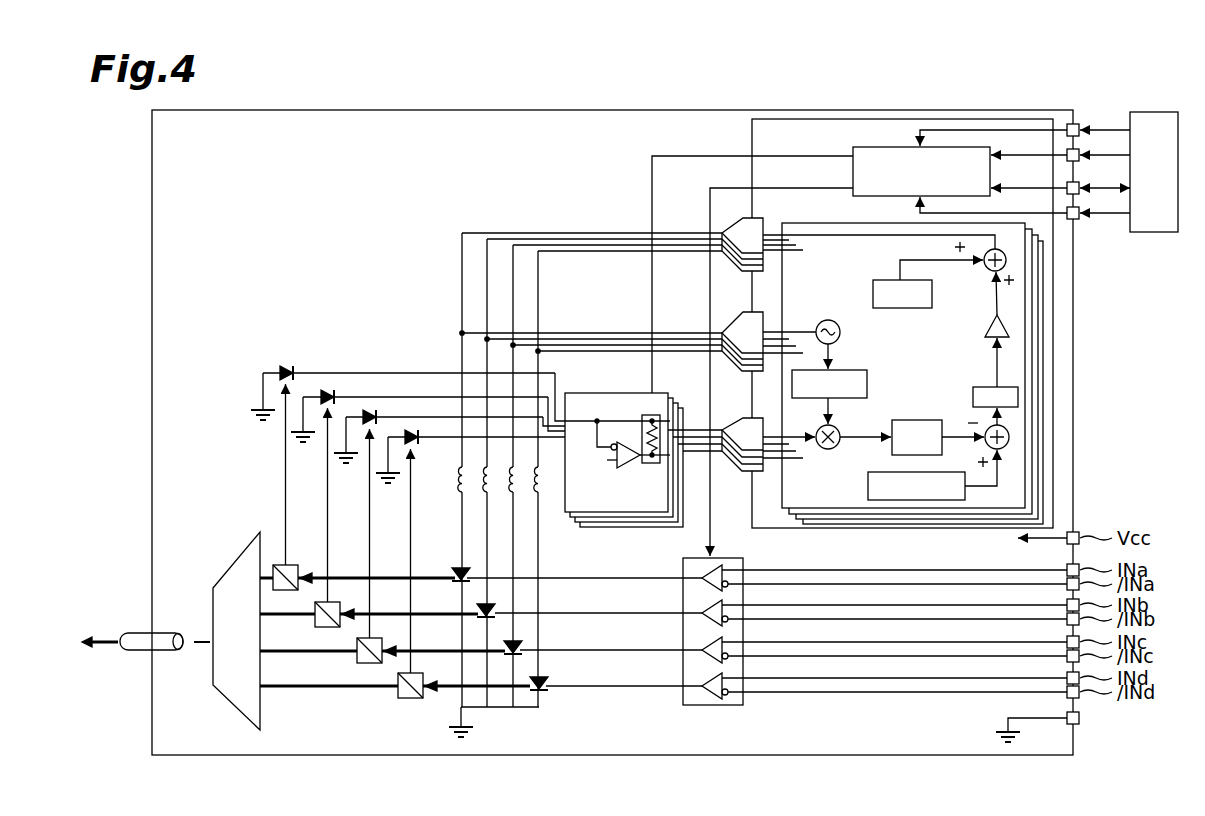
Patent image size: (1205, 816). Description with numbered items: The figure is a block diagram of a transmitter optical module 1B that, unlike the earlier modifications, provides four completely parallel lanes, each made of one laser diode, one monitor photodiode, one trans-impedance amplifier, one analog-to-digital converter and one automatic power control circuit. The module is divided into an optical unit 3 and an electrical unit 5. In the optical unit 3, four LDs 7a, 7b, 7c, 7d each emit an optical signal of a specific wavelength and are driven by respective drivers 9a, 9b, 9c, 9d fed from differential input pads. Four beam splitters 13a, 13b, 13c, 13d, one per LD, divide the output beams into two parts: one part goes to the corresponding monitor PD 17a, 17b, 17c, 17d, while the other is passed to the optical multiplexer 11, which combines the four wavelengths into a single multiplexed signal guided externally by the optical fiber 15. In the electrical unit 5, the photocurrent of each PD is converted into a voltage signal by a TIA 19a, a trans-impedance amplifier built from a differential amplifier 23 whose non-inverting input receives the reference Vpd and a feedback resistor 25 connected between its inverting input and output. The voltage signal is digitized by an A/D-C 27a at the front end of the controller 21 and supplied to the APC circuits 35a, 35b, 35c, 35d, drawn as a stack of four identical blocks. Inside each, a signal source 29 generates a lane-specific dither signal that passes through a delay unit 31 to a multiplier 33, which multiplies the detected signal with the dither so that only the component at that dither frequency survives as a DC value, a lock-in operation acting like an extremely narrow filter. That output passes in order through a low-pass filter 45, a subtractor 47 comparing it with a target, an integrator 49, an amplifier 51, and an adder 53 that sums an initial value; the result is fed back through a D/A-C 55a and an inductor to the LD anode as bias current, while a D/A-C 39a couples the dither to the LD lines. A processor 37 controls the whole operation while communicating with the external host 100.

The transmitter optical module 1B is at (980, 97).
The external host 100 is at (1152, 111).
The electrical unit 5 is at (716, 127).
The controller 21 is at (1055, 268).
The processor 37 is at (853, 177).
The digital-to-analog converter 55a is at (760, 218).
The digital-to-analog converter 39a is at (737, 319).
The analog-to-digital converter 27a is at (749, 474).
The APC circuit 35a is at (1026, 325).
The APC circuit 35b is at (1030, 352).
The APC circuit 35c is at (1036, 383).
The APC circuit 35d is at (1040, 411).
The signal source 29 is at (830, 320).
The delay unit 31 is at (855, 369).
The multiplier 33 is at (829, 450).
The low-pass filter 45 is at (920, 419).
The subtractor 47 is at (1004, 450).
The integrator 49 is at (985, 386).
The amplifier 51 is at (984, 327).
The adder 53 is at (987, 272).
The TIA 19a is at (565, 512).
The feedback resistor 25 is at (641, 412).
The differential amplifier 23 is at (634, 469).
The monitor PD 17a is at (283, 366).
The monitor PD 17b is at (324, 390).
The monitor PD 17c is at (366, 410).
The monitor PD 17d is at (409, 430).
The optical unit 3 is at (306, 568).
The optical multiplexer 11 is at (241, 556).
The beam splitter 13a is at (291, 565).
The beam splitter 13b is at (315, 621).
The beam splitter 13c is at (357, 657).
The beam splitter 13d is at (398, 693).
The optical fiber 15 is at (173, 633).
The LD 7a is at (457, 568).
The LD 7b is at (495, 620).
The LD 7c is at (520, 656).
The LD 7d is at (544, 694).
The driver 9a is at (700, 572).
The driver 9b is at (700, 607).
The driver 9c is at (700, 644).
The driver 9d is at (700, 681).